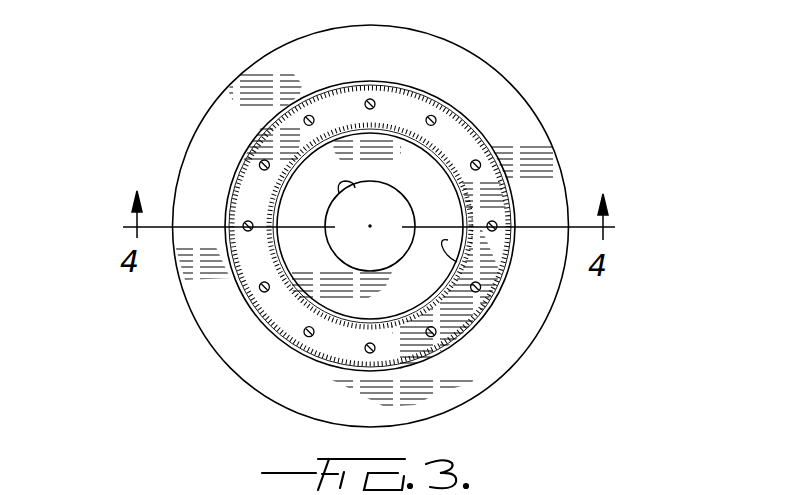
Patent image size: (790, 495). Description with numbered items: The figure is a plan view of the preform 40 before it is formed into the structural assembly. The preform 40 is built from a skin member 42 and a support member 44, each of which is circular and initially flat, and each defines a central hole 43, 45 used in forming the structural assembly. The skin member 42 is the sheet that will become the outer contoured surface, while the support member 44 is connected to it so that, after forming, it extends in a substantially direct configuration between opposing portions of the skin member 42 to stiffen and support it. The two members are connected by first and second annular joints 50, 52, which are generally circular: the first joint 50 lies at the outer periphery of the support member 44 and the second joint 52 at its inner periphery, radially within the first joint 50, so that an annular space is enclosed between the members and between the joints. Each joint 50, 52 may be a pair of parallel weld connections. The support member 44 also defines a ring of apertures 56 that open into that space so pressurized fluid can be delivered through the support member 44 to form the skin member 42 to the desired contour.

The preform 40 is at (231, 61).
The skin member 42 is at (527, 120).
The hole 43 is at (350, 186).
The support member 44 is at (496, 201).
The hole 45 is at (455, 258).
The first annular joint 50 is at (250, 131).
The second annular joint 52 is at (265, 183).
The apertures 56 is at (373, 101).